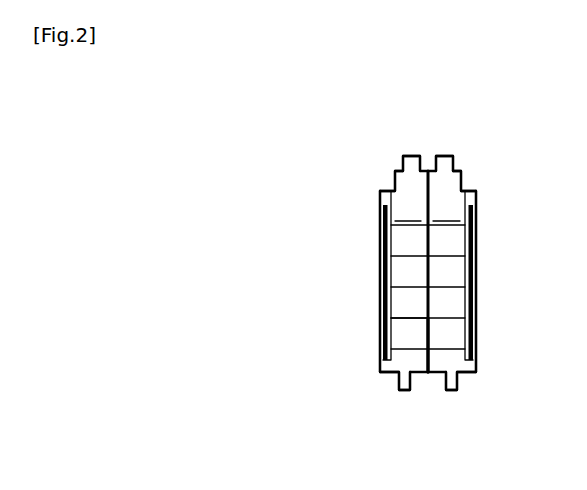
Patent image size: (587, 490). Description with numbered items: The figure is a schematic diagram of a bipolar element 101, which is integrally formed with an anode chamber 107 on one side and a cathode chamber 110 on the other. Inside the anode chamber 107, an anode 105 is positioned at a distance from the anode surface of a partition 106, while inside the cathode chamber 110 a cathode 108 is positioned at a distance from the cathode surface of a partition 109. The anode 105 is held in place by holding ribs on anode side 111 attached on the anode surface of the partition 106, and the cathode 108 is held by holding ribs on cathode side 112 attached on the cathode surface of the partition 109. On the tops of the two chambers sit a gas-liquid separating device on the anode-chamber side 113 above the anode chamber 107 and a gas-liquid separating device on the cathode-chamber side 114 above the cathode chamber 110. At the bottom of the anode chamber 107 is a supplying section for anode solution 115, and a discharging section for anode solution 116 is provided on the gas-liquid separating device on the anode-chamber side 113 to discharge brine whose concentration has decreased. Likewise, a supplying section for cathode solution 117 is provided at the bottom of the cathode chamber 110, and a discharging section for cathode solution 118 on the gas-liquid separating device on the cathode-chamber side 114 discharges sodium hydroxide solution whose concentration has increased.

The bipolar element 101 is at (510, 148).
The anode 105 is at (474, 309).
The partition 106 is at (432, 328).
The anode chamber 107 is at (446, 211).
The cathode 108 is at (380, 303).
The partition 109 is at (426, 330).
The cathode chamber 110 is at (408, 211).
The holding ribs on anode side 111 is at (448, 287).
The holding ribs on cathode side 112 is at (403, 287).
The gas-liquid separating device on the anode-chamber side 113 is at (462, 180).
The gas-liquid separating device on the cathode-chamber side 114 is at (395, 186).
The supplying section for anode solution 115 is at (458, 378).
The discharging section for anode solution 116 is at (448, 156).
The supplying section for cathode solution 117 is at (399, 380).
The discharging section for cathode solution 118 is at (411, 156).